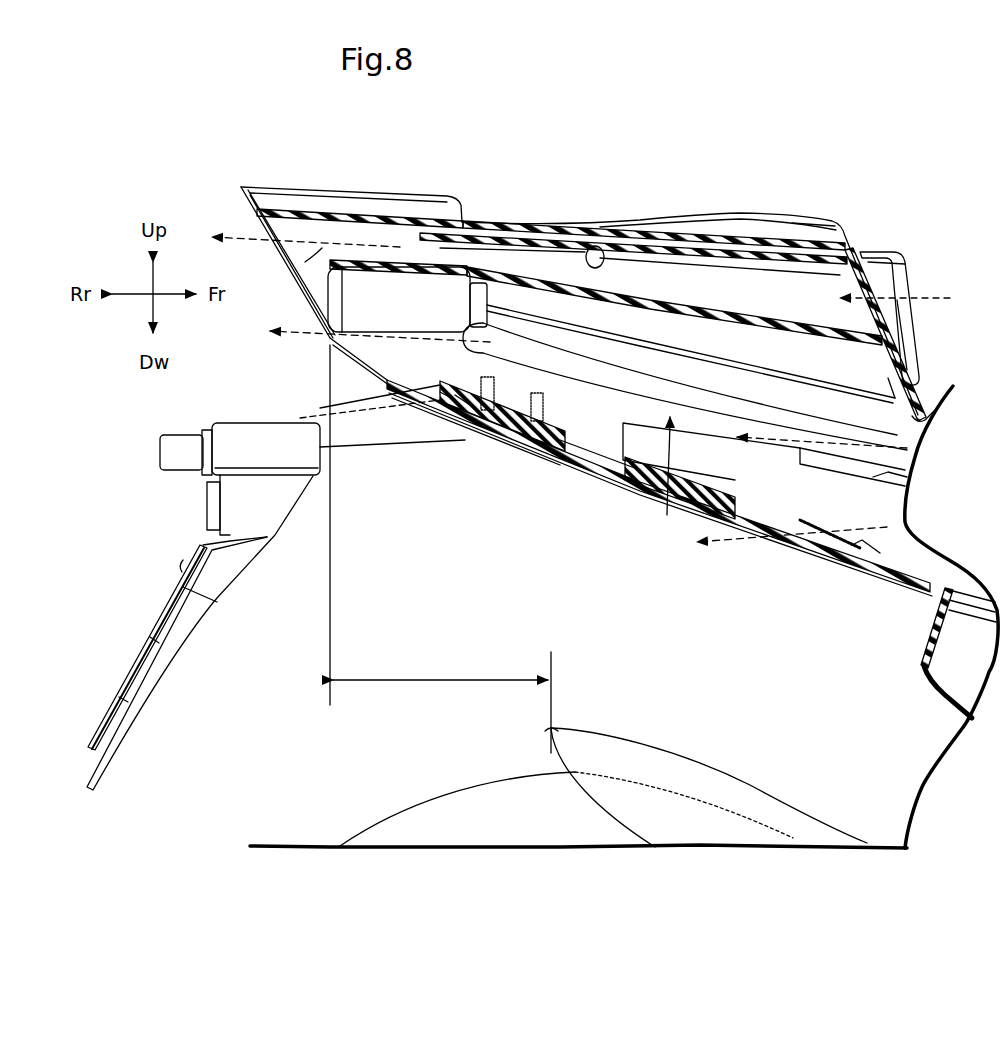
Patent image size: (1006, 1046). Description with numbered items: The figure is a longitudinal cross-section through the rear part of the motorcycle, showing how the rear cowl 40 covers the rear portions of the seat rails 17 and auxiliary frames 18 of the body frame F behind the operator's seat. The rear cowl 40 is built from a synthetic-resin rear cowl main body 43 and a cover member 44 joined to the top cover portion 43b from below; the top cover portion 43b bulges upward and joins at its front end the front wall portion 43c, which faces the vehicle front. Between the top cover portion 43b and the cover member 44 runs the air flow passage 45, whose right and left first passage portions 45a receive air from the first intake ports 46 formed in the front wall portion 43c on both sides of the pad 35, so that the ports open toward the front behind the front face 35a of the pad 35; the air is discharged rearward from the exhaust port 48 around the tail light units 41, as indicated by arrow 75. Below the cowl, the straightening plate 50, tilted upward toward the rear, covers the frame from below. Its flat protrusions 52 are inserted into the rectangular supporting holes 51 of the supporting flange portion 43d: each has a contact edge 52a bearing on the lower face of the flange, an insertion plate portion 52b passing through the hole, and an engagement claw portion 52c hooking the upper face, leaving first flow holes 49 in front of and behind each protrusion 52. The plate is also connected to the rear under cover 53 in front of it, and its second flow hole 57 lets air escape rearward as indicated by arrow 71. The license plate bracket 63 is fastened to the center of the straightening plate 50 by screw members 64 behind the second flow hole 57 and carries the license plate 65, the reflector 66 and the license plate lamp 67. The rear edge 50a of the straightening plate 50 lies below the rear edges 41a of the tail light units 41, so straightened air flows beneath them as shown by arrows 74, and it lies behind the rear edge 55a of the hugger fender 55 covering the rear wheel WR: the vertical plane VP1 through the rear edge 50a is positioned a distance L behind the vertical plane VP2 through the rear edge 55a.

The seat rails 17 is at (723, 400).
The auxiliary frames 18 is at (857, 473).
The pad 35 is at (910, 338).
The front face 35a is at (905, 288).
The rear cowl 40 is at (733, 172).
The tail light units 41 is at (453, 287).
The rear edges 41a is at (328, 300).
The rear cowl main body 43 is at (662, 213).
The top cover portion 43b is at (792, 223).
The front wall portion 43c is at (917, 373).
The supporting flange portions 43d is at (880, 553).
The cover member 44 is at (715, 305).
The air flow passage 45 is at (583, 257).
The first passage portions 45a is at (803, 302).
The first intake ports 46 is at (850, 277).
The exhaust port 48 is at (308, 255).
The first flow holes 49 is at (417, 430).
The straightening plate 50 is at (570, 460).
The rear edge 50a is at (328, 333).
The supporting holes 51 is at (463, 430).
The protrusions 52 is at (550, 420).
The contact edge 52a is at (580, 452).
The insertion plate portion 52b is at (462, 392).
The engagement claw portion 52c is at (443, 387).
The rear under cover 53 is at (922, 668).
The hugger fender 55 is at (703, 767).
The rear edge 55a is at (550, 730).
The second flow hole 57 is at (807, 520).
The license plate bracket 63 is at (385, 433).
The screw members 64 is at (535, 395).
The license plate 65 is at (160, 607).
The reflector 66 is at (185, 437).
The license plate lamp 67 is at (207, 503).
The arrow 71 is at (745, 545).
The arrows 74 is at (407, 343).
The arrow 75 is at (325, 240).
The body frame F is at (664, 477).
The distance L is at (437, 680).
The vertical plane VP1 is at (328, 613).
The vertical plane VP2 is at (552, 670).
The rear wheel WR is at (408, 827).